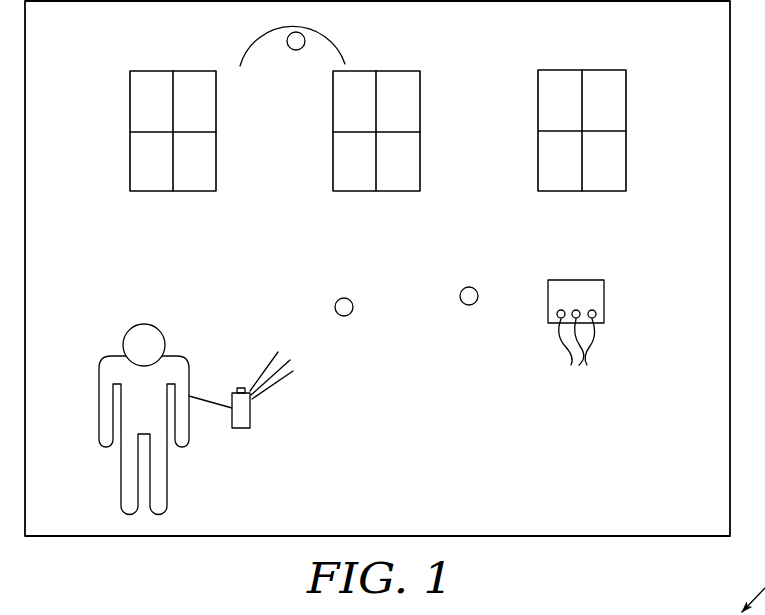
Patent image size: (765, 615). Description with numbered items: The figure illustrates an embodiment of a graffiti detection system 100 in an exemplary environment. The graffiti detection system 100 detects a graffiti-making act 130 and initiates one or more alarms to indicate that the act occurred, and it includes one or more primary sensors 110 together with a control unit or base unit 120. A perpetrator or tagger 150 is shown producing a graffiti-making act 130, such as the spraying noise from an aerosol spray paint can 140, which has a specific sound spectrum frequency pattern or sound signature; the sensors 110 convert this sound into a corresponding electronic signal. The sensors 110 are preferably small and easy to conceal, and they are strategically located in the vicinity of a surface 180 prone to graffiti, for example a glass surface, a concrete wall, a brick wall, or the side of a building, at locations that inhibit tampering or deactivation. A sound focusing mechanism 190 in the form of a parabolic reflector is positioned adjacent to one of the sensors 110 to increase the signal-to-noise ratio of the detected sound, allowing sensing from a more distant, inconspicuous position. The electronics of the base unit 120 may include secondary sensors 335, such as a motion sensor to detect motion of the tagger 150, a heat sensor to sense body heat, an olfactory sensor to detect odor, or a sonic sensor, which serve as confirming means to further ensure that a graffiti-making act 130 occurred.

The graffiti detection system 100 is at (500, 216).
The primary sensor 110 is at (295, 50).
The control unit or base unit 120 is at (608, 285).
The graffiti-making act 130 is at (314, 370).
The aerosol spray paint can 140 is at (240, 428).
The perpetrator or tagger 150 is at (121, 318).
The surface prone to graffiti 180 is at (539, 455).
The sound focusing mechanism 190 is at (246, 31).
The secondary sensors 335 is at (577, 356).